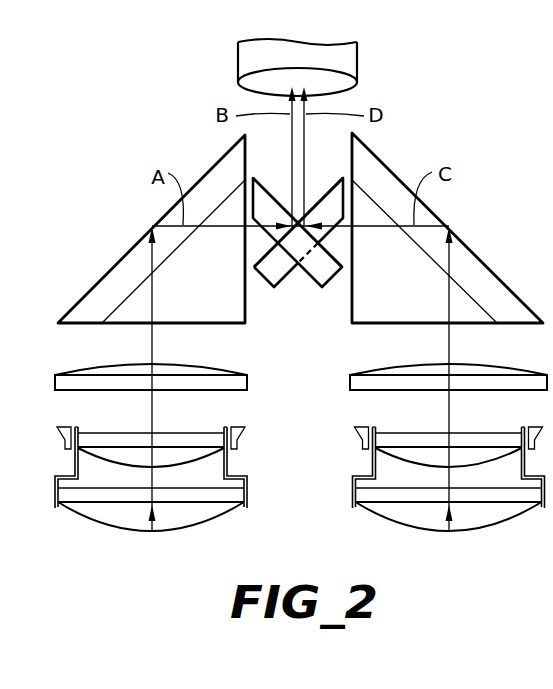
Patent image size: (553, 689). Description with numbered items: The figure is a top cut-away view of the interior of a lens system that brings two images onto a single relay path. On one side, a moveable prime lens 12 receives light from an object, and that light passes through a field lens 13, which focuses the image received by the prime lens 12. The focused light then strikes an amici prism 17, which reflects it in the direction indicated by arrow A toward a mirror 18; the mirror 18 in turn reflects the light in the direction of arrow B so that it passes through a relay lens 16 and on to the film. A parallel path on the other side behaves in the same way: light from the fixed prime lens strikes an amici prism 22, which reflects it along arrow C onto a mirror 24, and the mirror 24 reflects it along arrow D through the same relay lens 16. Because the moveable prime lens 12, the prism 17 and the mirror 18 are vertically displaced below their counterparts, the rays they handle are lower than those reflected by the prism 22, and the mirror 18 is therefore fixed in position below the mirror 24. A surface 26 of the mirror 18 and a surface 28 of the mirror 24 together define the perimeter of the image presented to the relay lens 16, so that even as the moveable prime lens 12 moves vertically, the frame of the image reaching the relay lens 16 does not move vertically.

The moveable prime lens 12 is at (552, 462).
The field lens 13 is at (552, 345).
The relay lens 16 is at (300, 55).
The amici prism 17 is at (125, 270).
The mirror 18 is at (277, 272).
The amici prism 22 is at (470, 275).
The mirror 24 is at (320, 272).
The surface 26 is at (262, 256).
The surface 28 is at (340, 254).